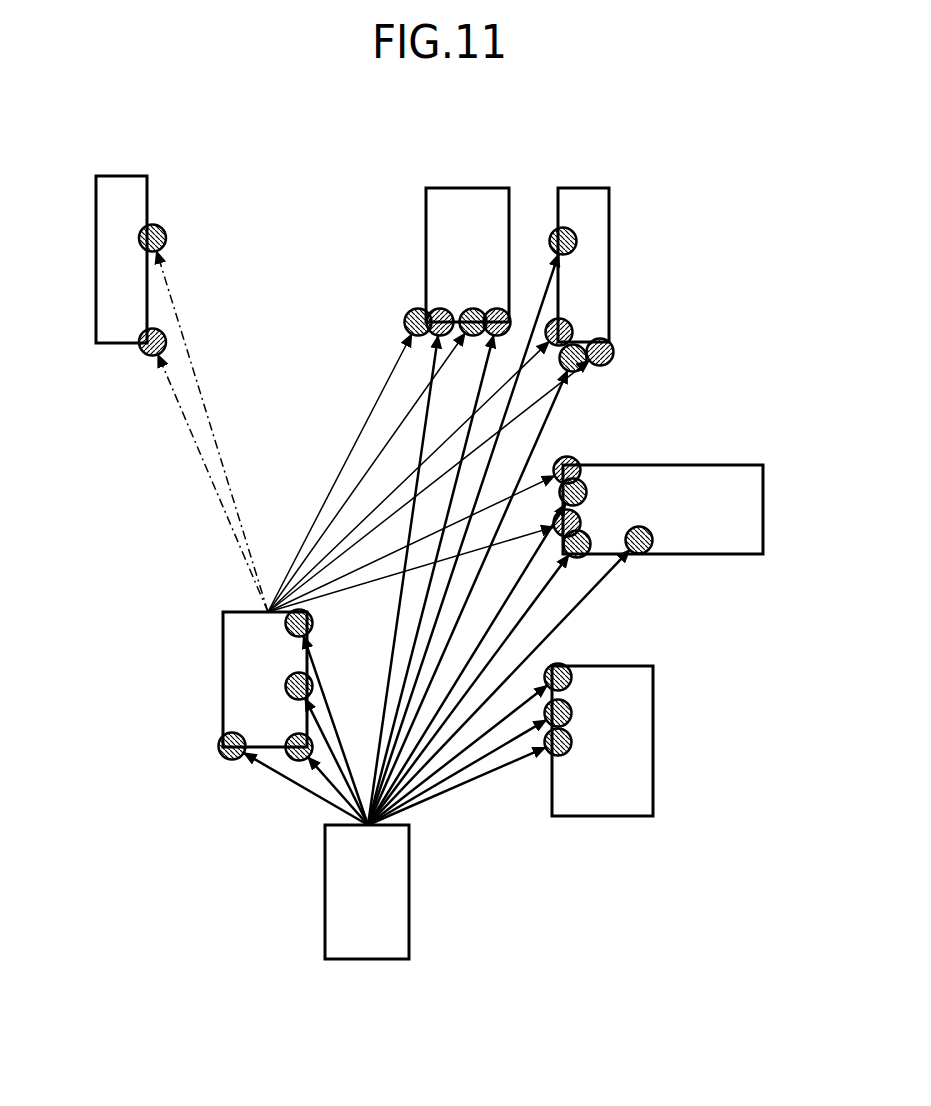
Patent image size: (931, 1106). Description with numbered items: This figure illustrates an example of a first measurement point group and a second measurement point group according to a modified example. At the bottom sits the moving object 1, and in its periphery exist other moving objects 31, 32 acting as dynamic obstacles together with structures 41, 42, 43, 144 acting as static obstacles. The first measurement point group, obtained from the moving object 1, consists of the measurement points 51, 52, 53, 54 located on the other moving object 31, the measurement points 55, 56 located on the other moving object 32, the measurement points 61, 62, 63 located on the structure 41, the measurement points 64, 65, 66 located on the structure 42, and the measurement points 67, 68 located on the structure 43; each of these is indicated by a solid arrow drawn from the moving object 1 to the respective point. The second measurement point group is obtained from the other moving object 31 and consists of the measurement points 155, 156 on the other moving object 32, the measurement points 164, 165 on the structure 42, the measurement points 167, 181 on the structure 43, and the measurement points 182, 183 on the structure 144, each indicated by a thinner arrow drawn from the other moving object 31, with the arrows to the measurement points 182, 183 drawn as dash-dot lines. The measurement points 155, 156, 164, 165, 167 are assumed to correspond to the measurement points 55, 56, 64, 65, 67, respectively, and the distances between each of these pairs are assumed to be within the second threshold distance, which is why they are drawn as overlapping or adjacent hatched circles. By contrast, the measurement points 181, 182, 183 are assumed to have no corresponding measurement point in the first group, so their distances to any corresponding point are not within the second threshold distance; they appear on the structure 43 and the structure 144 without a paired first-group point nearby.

The moving object 1 is at (365, 959).
The other moving object 31 is at (235, 612).
The other moving object 32 is at (474, 188).
The structure 41 is at (600, 816).
The structure 42 is at (763, 508).
The structure 43 is at (588, 188).
The structure 144 is at (128, 176).
The measurement point 51 is at (218, 746).
The measurement point 52 is at (299, 733).
The measurement point 53 is at (285, 686).
The measurement point 54 is at (285, 622).
The measurement point 55 is at (404, 322).
The measurement point 155 is at (440, 308).
The measurement point 56 is at (473, 308).
The measurement point 156 is at (497, 308).
The measurement point 61 is at (572, 742).
The measurement point 62 is at (572, 713).
The measurement point 63 is at (572, 677).
The measurement point 64 is at (581, 483).
The measurement point 164 is at (565, 457).
The measurement point 65 is at (584, 536).
The measurement point 165 is at (578, 516).
The measurement point 66 is at (639, 554).
The measurement point 67 is at (578, 371).
The measurement point 167 is at (613, 352).
The measurement point 68 is at (577, 243).
The measurement point 181 is at (572, 332).
The measurement point 182 is at (153, 356).
The measurement point 183 is at (166, 239).